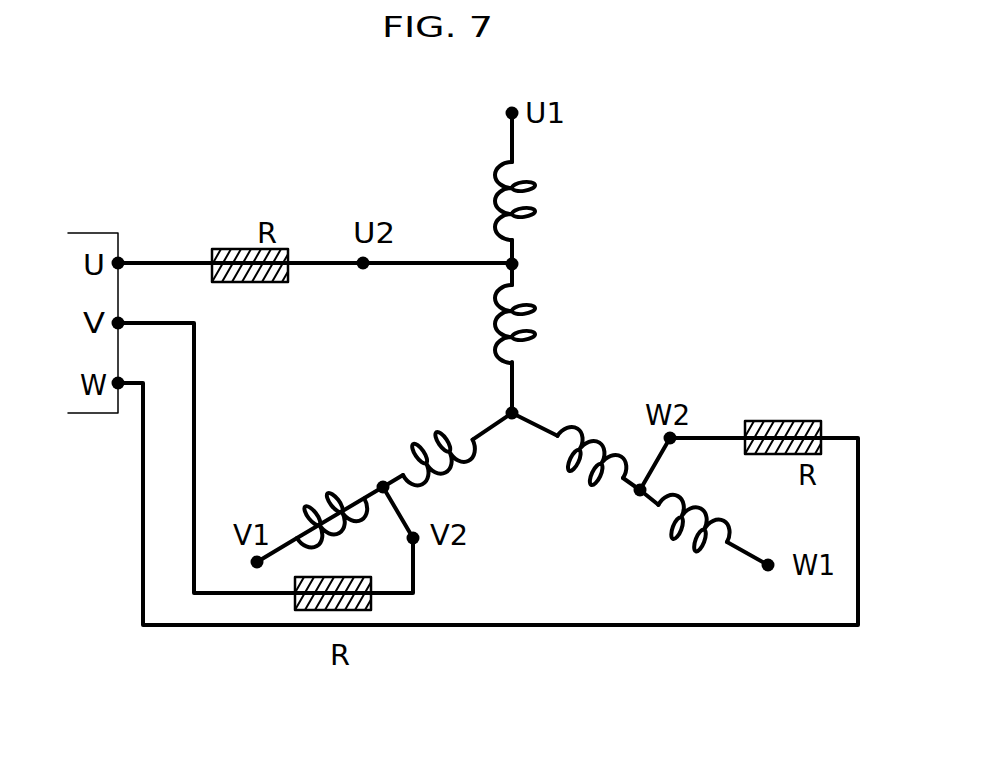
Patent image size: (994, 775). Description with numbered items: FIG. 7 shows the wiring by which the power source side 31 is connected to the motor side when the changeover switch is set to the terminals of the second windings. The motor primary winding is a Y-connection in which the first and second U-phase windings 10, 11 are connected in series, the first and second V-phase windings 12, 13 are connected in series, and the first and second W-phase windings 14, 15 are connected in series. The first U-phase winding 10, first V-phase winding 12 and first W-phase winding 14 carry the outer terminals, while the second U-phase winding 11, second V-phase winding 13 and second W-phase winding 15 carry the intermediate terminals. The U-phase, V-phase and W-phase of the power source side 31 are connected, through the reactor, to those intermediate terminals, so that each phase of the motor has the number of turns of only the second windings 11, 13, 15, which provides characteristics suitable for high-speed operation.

The first U-phase winding 10 is at (532, 201).
The second U-phase winding 11 is at (531, 324).
The first V-phase winding 12 is at (329, 506).
The second V-phase winding 13 is at (440, 456).
The first W-phase winding 14 is at (696, 525).
The second W-phase winding 15 is at (588, 448).
The power source side 31 is at (88, 414).